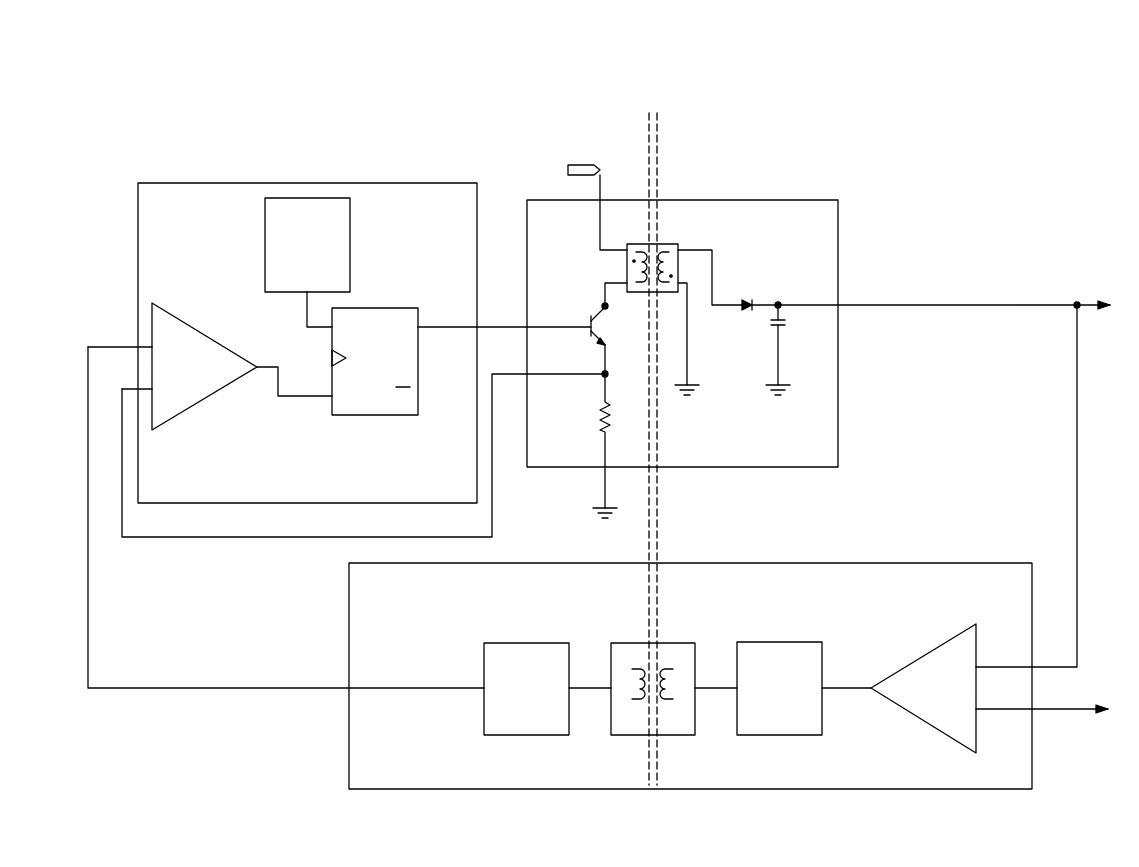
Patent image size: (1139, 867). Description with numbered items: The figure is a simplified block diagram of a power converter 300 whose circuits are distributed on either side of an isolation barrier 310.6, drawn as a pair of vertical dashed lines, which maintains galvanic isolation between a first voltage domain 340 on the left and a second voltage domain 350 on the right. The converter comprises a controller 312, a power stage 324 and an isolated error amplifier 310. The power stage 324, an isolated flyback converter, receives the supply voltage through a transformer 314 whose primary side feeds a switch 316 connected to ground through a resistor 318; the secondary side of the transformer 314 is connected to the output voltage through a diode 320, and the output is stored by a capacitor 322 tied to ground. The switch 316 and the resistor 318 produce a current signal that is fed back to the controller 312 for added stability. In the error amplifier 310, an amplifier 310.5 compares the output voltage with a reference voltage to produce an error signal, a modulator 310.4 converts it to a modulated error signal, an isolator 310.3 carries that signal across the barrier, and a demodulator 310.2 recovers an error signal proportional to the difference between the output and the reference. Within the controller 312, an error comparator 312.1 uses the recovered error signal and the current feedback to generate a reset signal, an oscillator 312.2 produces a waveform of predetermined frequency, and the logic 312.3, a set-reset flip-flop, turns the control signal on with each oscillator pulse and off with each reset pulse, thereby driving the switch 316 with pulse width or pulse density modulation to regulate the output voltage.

The power converter 300 is at (783, 44).
The error amplifier 310 is at (382, 782).
The demodulator 310.2 is at (484, 643).
The isolator 310.3 is at (609, 731).
The modulator 310.4 is at (803, 642).
The amplifier 310.5 is at (942, 700).
The isolation barrier 310.6 is at (675, 113).
The controller 312 is at (170, 498).
The error comparator 312.1 is at (215, 376).
The oscillator 312.2 is at (352, 262).
The logic 312.3 is at (398, 365).
The transformer 314 is at (690, 236).
The switch 316 is at (604, 358).
The resistor 318 is at (595, 425).
The diode 320 is at (760, 296).
The capacitor 322 is at (814, 338).
The power stage 324 is at (557, 460).
The first voltage domain 340 is at (510, 153).
The second voltage domain 350 is at (888, 178).